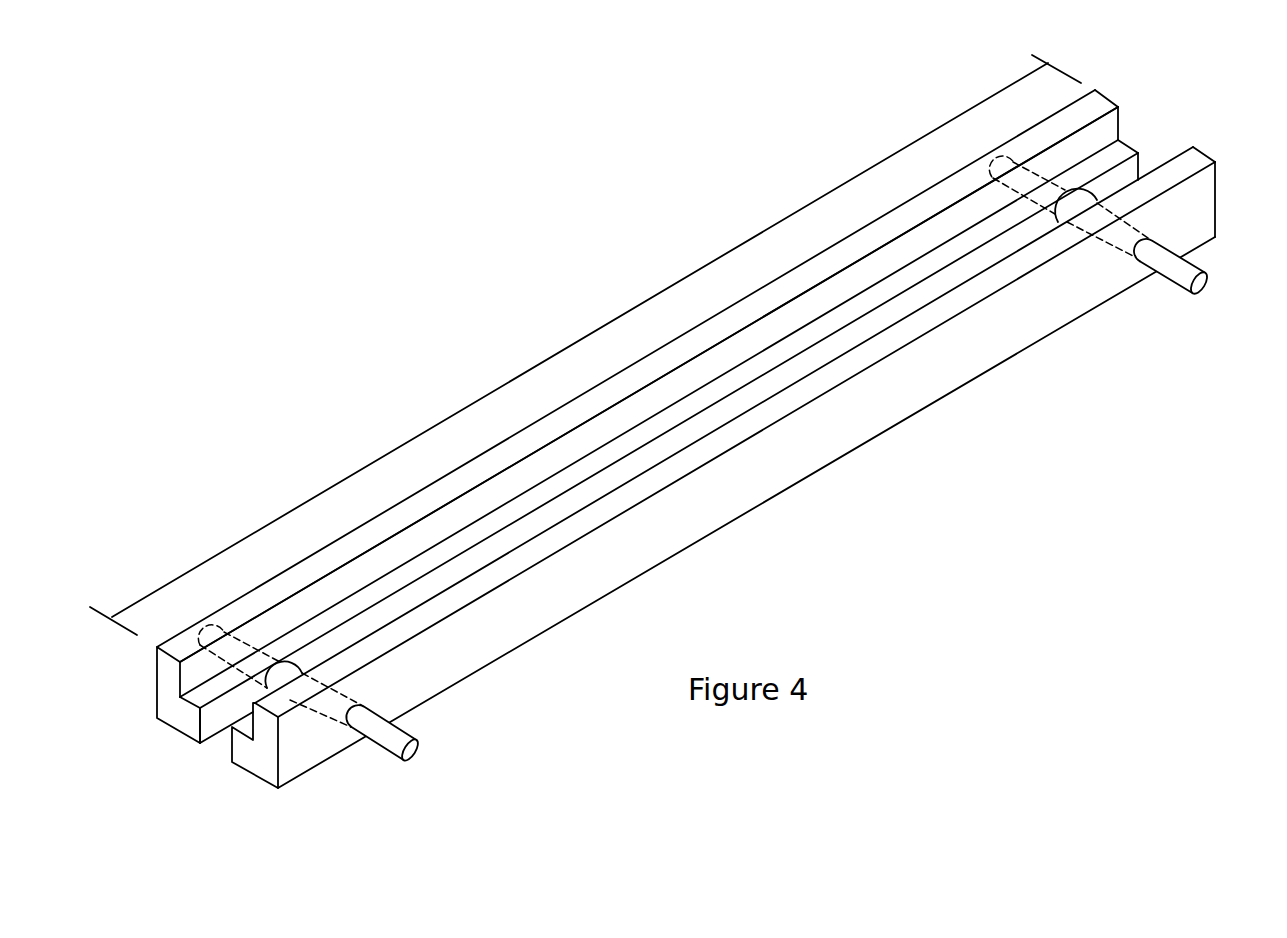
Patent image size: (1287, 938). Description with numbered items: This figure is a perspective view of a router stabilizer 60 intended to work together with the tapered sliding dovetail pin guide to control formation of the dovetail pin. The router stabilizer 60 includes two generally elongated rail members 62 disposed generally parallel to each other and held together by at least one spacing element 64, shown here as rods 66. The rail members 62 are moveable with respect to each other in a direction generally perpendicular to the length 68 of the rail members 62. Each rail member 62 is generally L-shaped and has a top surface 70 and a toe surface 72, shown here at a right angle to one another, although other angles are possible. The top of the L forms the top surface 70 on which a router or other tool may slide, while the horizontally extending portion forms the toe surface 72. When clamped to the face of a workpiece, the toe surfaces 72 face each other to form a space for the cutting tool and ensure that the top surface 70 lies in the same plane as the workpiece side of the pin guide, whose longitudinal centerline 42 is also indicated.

The longitudinal centerline 42 is at (648, 441).
The router stabilizer 60 is at (967, 455).
The rail member 62 is at (493, 455).
The spacing element 64 is at (804, 530).
The rod 66 is at (410, 733).
The length 68 is at (755, 232).
The top surface 70 is at (649, 384).
The toe surface 72 is at (193, 695).